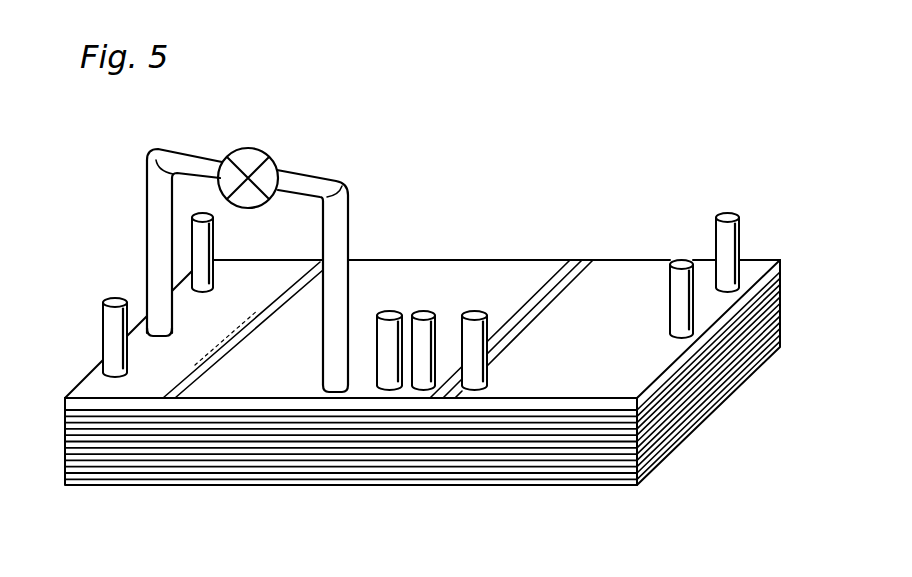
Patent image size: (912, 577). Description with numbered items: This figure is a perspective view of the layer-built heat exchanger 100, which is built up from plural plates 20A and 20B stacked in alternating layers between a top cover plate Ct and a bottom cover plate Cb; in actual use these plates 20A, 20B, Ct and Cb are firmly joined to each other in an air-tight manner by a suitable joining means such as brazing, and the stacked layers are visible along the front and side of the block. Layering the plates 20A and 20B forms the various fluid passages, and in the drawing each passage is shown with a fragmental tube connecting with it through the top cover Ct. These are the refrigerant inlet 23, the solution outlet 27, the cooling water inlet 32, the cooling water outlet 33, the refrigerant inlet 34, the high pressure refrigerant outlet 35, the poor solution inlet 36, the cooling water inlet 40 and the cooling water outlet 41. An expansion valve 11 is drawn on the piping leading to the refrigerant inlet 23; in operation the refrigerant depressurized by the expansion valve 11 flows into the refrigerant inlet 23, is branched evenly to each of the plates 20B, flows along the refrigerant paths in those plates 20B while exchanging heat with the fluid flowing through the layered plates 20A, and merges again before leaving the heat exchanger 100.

The layer-built heat exchanger 100 is at (560, 141).
The expansion valve 11 is at (256, 154).
The refrigerant inlet 23 is at (158, 265).
The cooling water inlet 32 is at (201, 229).
The cooling water outlet 33 is at (104, 317).
The refrigerant inlet 34 is at (388, 313).
The high pressure refrigerant outlet 35 is at (327, 312).
The poor solution inlet 36 is at (422, 313).
The cooling water outlet 41 is at (475, 313).
The solution outlet 27 is at (680, 262).
The cooling water inlet 40 is at (729, 241).
The top cover plate Ct is at (780, 262).
The bottom cover plate Cb is at (780, 338).
The plate 20A is at (747, 337).
The plate 20B is at (733, 357).